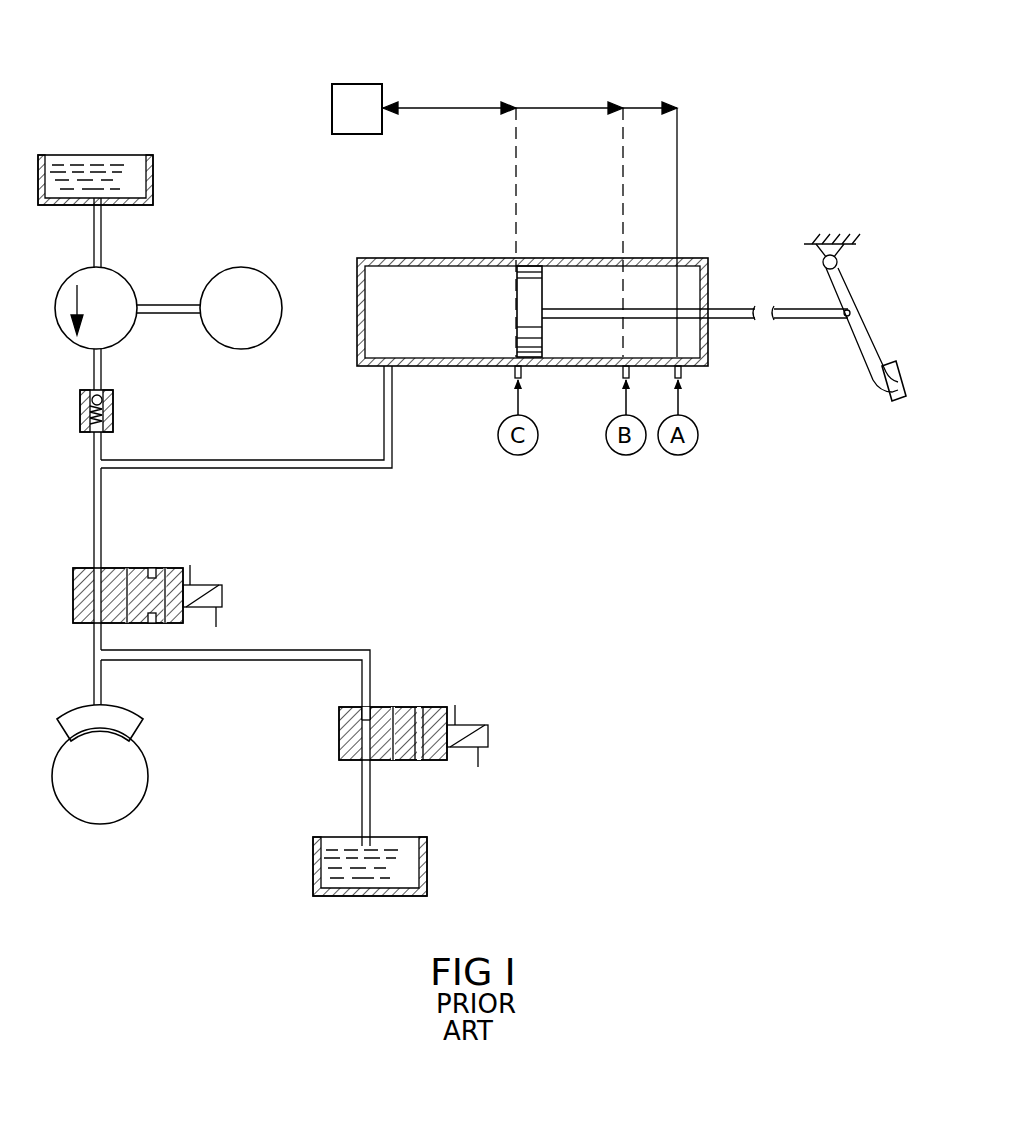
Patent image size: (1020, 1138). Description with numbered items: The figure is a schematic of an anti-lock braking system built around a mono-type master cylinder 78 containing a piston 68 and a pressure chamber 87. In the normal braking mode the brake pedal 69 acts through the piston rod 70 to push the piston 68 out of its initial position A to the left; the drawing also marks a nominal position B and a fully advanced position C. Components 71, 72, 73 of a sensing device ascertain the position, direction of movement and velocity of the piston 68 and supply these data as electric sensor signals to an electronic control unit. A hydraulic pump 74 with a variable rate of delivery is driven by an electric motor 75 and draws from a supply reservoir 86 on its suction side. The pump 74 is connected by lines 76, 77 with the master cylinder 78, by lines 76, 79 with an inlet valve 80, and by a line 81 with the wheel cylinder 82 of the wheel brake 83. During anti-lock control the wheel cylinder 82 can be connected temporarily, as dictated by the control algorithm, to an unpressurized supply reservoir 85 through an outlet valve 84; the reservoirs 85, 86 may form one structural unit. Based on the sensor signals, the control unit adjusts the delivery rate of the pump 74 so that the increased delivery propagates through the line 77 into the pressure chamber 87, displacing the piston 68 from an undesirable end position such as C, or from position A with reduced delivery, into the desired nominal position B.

The piston 68 is at (528, 278).
The brake pedal 69 is at (856, 362).
The piston rod 70 is at (580, 308).
The sensing device component 71 is at (358, 84).
The sensing device component 72 is at (562, 108).
The sensing device component 73 is at (677, 148).
The hydraulic pump 74 is at (122, 292).
The electric motor 75 is at (258, 293).
The line 76 is at (103, 363).
The line 77 is at (232, 460).
The master cylinder 78 is at (448, 380).
The line 79 is at (103, 497).
The inlet valve 80 is at (118, 572).
The line 81 is at (103, 676).
The wheel cylinder 82 is at (128, 720).
The wheel brake 83 is at (133, 776).
The outlet valve 84 is at (404, 710).
The supply reservoir 85 is at (427, 855).
The supply reservoir 86 is at (153, 171).
The pressure chamber 87 is at (452, 325).